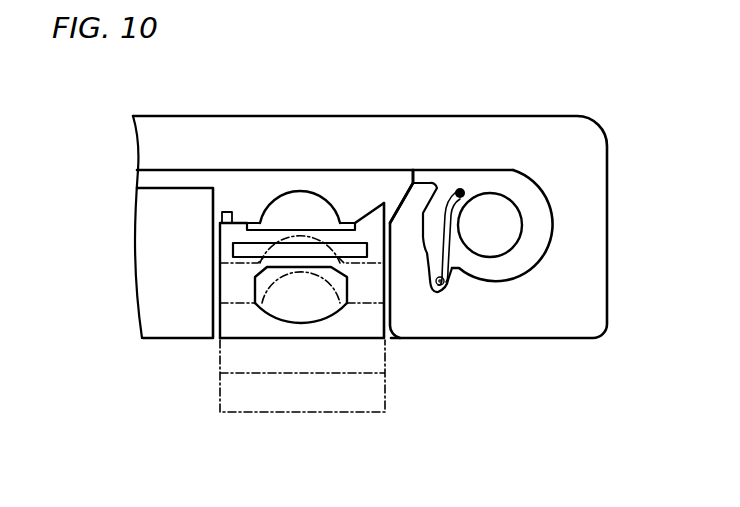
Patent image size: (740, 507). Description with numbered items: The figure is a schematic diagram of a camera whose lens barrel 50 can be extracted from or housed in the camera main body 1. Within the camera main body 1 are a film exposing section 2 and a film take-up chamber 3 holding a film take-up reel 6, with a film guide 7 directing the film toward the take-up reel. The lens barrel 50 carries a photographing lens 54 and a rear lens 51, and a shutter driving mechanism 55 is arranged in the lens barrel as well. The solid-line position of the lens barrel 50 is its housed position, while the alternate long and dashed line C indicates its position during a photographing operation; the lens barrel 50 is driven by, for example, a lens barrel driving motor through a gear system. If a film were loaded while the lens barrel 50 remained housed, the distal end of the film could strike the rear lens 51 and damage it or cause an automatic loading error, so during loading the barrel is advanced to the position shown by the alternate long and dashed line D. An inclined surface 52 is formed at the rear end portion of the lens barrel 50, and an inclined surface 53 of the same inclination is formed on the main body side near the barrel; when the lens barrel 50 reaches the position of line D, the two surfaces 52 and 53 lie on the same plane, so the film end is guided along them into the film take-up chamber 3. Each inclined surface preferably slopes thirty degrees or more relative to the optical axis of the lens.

The camera main body 1 is at (497, 133).
The film exposing section 2 is at (243, 185).
The film take-up chamber 3 is at (540, 202).
The film take-up reel 6 is at (513, 227).
The film guide 7 is at (457, 270).
The lens barrel 50 is at (363, 322).
The rear lens 51 is at (302, 198).
The inclined surface 52 is at (382, 206).
The inclined surface 53 is at (413, 178).
The photographing lens 54 is at (278, 303).
The shutter driving mechanism 55 is at (233, 250).
The alternate long and dashed line C is at (378, 258).
The alternate long and dashed line D is at (255, 373).